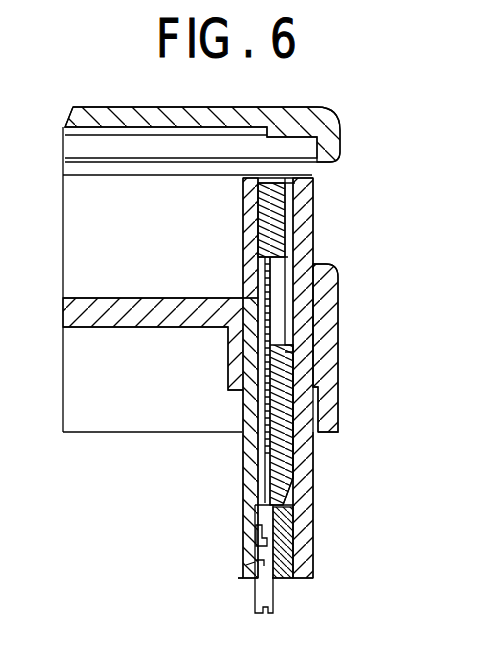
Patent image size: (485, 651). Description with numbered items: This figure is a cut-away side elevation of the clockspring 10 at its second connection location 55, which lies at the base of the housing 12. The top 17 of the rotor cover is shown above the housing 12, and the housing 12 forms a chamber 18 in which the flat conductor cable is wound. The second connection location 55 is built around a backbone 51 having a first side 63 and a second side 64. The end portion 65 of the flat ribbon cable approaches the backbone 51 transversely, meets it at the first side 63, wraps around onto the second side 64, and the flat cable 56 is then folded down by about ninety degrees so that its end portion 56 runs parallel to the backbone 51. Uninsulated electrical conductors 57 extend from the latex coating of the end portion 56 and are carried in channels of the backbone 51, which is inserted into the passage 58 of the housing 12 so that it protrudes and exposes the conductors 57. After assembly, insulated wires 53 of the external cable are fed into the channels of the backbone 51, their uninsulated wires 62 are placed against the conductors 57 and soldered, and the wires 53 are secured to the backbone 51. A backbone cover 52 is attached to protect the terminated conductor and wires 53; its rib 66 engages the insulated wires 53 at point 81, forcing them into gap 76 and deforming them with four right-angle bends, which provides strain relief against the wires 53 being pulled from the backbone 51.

The clockspring 10 is at (61, 446).
The housing 12 is at (332, 338).
The top of rotor cover 17 is at (318, 107).
The chamber 18 is at (120, 225).
The backbone 51 is at (272, 237).
The backbone cover 52 is at (302, 484).
The insulated wires 53 is at (272, 595).
The second connection location 55 is at (316, 498).
The end portion of the flat cable 56 is at (254, 249).
The electrical conductors 57 is at (258, 409).
The passage 58 is at (300, 296).
The uninsulated wires 62 is at (244, 468).
The first side of backbone 63 is at (305, 182).
The second side of backbone 64 is at (285, 190).
The end portion of the flat ribbon cable 65 is at (293, 252).
The rib 66 is at (255, 530).
The gap 76 is at (295, 551).
The point 81 is at (246, 562).